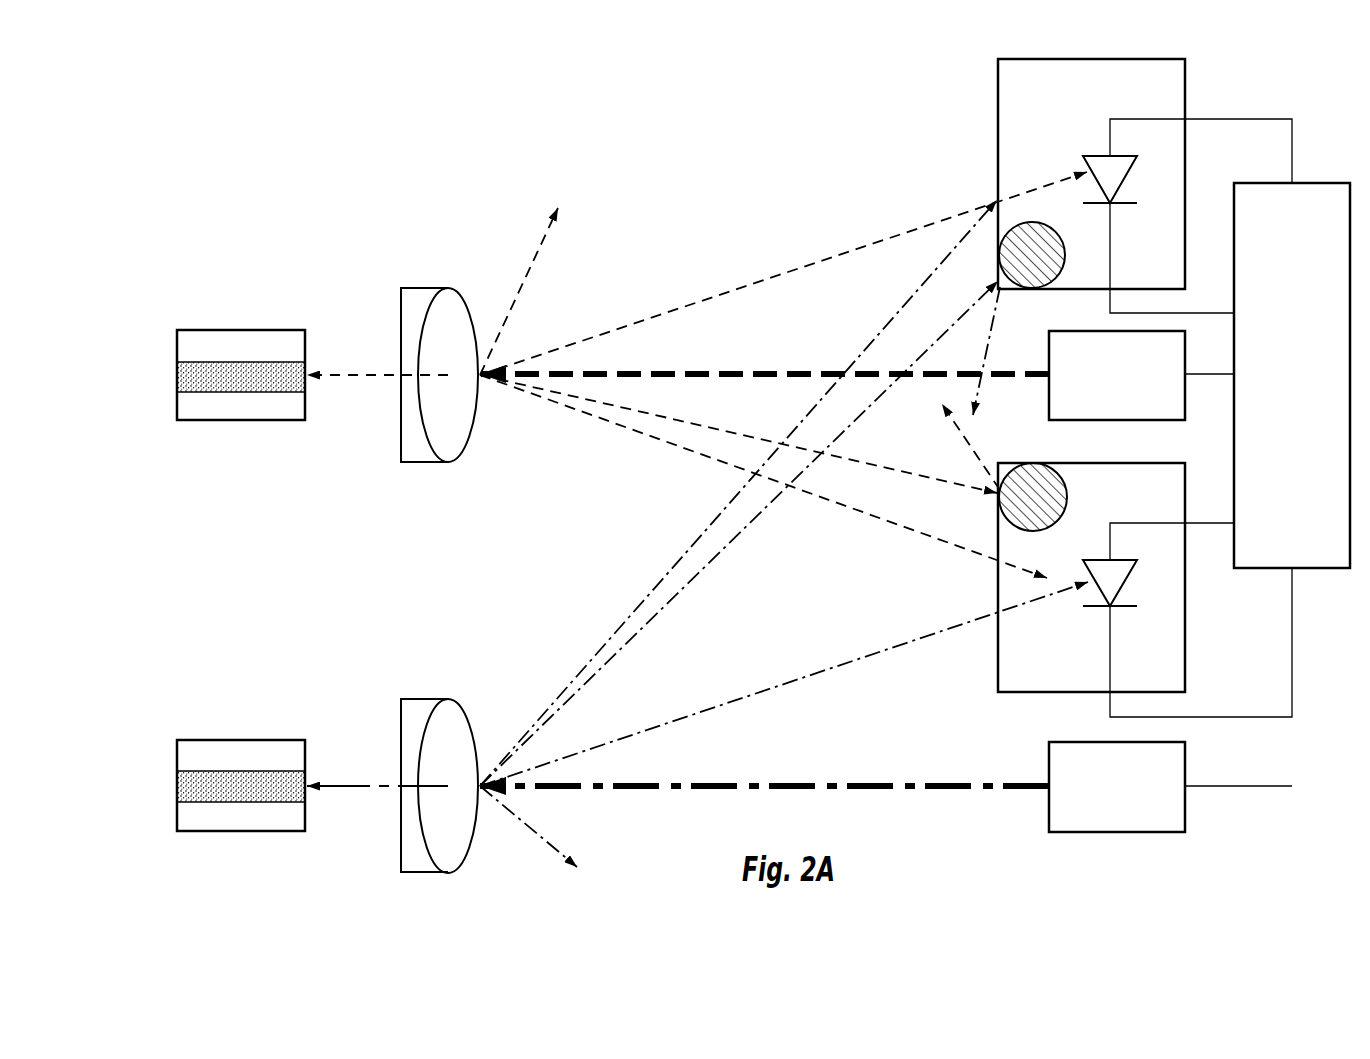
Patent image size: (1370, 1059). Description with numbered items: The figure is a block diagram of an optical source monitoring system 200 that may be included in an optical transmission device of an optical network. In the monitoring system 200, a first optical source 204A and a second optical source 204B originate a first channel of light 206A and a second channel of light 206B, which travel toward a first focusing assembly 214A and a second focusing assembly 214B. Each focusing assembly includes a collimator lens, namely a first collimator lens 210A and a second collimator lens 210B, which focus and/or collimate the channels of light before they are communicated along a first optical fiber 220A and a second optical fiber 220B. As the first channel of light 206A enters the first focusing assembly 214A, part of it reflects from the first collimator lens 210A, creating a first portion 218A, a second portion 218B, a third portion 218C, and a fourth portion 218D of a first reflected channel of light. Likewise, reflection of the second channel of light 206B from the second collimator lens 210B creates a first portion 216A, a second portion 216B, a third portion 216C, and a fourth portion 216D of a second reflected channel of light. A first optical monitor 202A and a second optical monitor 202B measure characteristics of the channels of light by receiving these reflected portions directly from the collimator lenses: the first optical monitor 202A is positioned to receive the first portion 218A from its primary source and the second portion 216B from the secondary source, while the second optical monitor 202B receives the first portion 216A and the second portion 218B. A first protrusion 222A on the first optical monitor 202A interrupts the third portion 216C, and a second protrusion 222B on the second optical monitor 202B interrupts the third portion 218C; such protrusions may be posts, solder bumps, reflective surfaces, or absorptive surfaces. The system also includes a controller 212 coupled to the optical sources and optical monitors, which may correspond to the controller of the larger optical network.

The optical source monitoring system 200 is at (318, 100).
The first optical monitor 202A is at (1087, 186).
The second optical monitor 202B is at (1145, 574).
The first optical source 204A is at (1097, 414).
The second optical source 204B is at (1097, 824).
The first channel of light 206A is at (660, 371).
The second channel of light 206B is at (660, 782).
The first collimator lens 210A is at (460, 433).
The second collimator lens 210B is at (460, 845).
The controller 212 is at (1292, 375).
The first focusing assembly 214A is at (423, 354).
The second focusing assembly 214B is at (424, 764).
The first portion of second reflected channel of light 216A is at (760, 691).
The second portion of second reflected channel of light 216B is at (662, 577).
The third portion of second reflected channel of light 216C is at (670, 600).
The fourth portion of second reflected channel of light 216D is at (542, 837).
The first portion of first reflected channel of light 218A is at (763, 280).
The second portion of first reflected channel of light 218B is at (647, 438).
The third portion of first reflected channel of light 218C is at (668, 420).
The fourth portion of first reflected channel of light 218D is at (532, 272).
The first optical fiber 220A is at (222, 330).
The second optical fiber 220B is at (222, 740).
The first protrusion 222A is at (999, 240).
The second protrusion 222B is at (1062, 478).